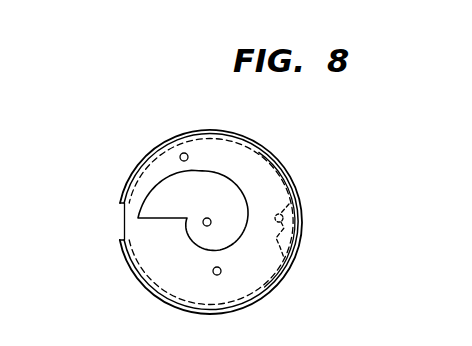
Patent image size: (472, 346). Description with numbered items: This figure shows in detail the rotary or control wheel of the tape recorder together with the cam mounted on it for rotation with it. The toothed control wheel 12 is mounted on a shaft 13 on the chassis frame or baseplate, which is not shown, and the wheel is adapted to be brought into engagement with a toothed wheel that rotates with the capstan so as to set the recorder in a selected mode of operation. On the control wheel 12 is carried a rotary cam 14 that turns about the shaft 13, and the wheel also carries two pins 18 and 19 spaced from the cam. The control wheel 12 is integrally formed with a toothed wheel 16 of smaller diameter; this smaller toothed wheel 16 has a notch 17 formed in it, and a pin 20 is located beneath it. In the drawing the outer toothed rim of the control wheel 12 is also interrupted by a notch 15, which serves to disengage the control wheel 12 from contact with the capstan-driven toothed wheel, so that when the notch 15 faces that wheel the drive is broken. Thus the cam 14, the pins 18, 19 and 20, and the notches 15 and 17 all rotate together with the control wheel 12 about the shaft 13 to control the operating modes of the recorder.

The control wheel 12 is at (260, 143).
The shaft 13 is at (204, 219).
The rotary cam 14 is at (240, 193).
The notch 15 is at (124, 226).
The toothed wheel 16 is at (283, 177).
The notch 17 is at (296, 253).
The pin 18 is at (213, 272).
The pin 19 is at (182, 153).
The pin 20 is at (285, 210).